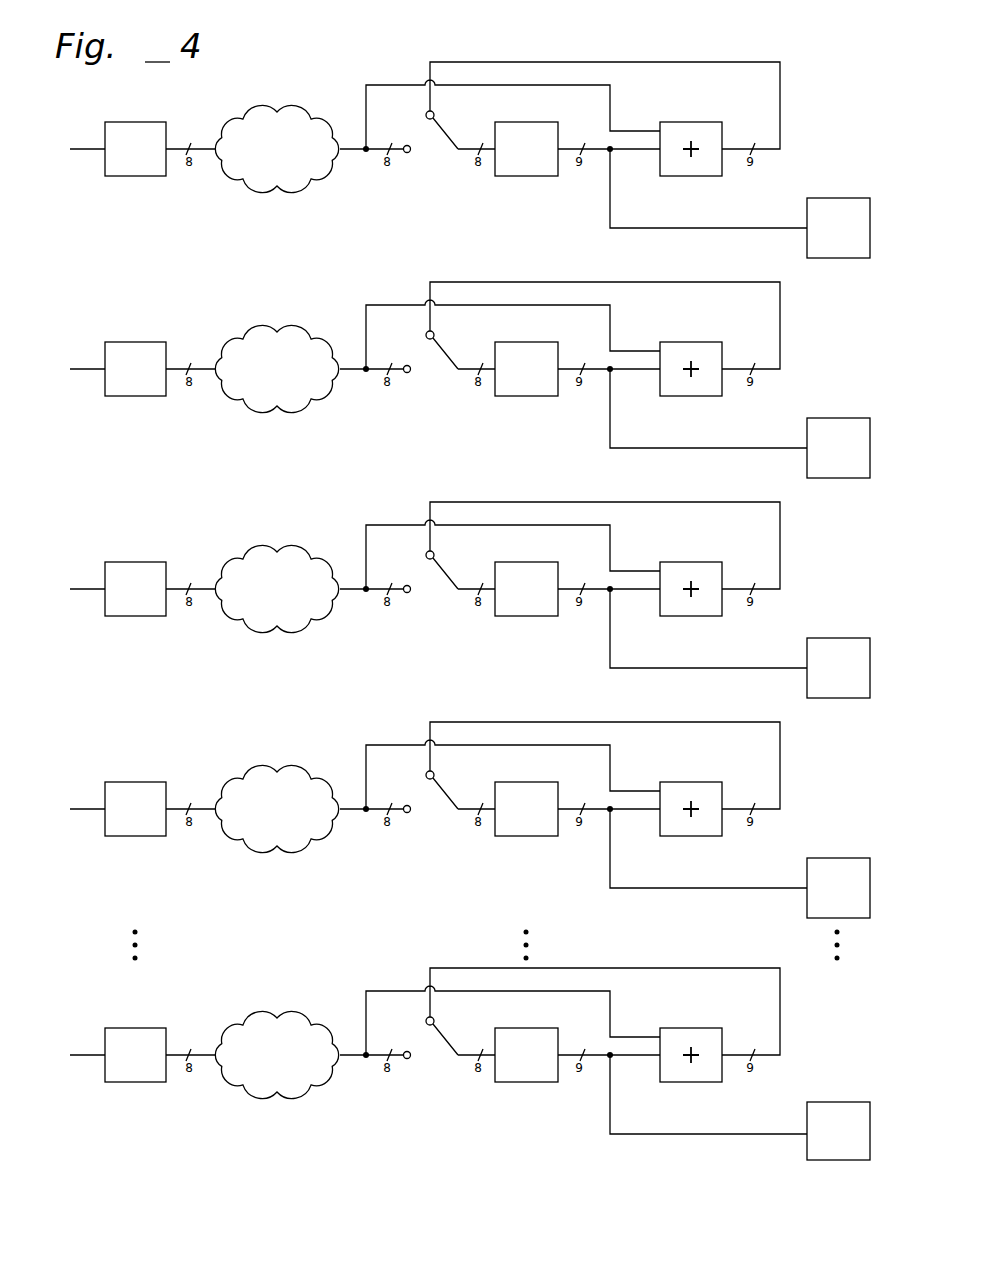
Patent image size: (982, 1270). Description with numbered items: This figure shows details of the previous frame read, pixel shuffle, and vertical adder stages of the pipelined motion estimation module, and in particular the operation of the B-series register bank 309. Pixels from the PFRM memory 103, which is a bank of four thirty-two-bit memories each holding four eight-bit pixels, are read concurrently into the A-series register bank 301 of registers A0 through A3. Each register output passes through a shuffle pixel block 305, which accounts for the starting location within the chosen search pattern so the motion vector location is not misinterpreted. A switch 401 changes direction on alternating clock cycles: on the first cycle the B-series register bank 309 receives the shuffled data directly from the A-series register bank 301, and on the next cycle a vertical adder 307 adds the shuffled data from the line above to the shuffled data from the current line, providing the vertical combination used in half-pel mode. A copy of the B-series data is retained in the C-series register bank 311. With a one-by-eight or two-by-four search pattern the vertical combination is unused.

The PFRM memory 103 is at (36, 1175).
The A-series register bank 301 is at (108, 1175).
The shuffle pixel block 305 is at (345, 1175).
The switch 401 is at (478, 1175).
The B-series register bank 309 is at (498, 1175).
The vertical adder 307 is at (662, 1175).
The C-series register bank 311 is at (870, 1175).